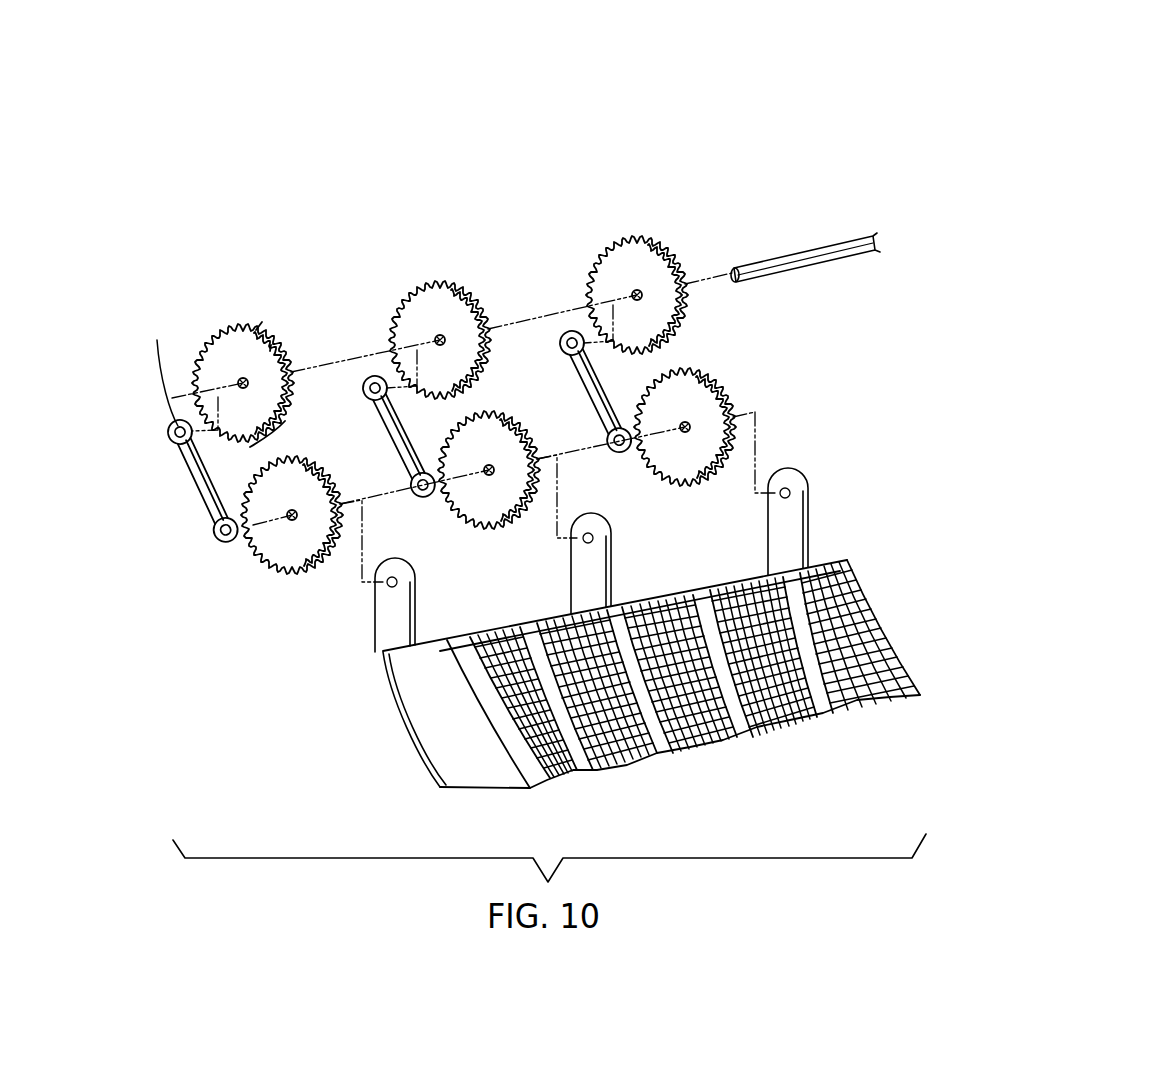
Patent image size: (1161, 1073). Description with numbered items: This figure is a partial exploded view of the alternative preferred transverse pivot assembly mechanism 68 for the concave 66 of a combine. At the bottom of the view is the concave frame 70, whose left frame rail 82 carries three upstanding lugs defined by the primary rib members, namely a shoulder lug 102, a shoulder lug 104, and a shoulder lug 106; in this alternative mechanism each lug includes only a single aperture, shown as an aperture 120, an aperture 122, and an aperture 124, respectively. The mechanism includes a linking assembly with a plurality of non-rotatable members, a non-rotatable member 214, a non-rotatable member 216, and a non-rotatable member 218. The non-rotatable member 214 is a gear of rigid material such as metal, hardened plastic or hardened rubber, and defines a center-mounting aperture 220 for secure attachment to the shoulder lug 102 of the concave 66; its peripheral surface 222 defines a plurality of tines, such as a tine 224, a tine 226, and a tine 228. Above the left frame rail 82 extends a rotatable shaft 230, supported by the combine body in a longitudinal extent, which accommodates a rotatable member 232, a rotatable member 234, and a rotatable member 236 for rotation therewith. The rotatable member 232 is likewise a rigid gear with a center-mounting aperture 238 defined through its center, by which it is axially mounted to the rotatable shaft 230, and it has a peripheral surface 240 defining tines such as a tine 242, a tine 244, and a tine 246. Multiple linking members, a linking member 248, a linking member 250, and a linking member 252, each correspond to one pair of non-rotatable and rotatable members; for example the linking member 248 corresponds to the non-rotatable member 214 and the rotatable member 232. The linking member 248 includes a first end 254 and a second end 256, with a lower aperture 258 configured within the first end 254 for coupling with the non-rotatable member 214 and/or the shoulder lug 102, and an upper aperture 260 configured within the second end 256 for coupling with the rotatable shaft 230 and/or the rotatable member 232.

The concave 66 is at (300, 772).
The alternative preferred transverse pivot assembly mechanism 68 is at (770, 124).
The concave frame 70 is at (440, 799).
The left frame rail 82 is at (827, 557).
The shoulder lug 102 is at (365, 615).
The shoulder lug 104 is at (632, 555).
The shoulder lug 106 is at (853, 467).
The aperture 120 is at (400, 580).
The aperture 122 is at (600, 535).
The aperture 124 is at (790, 492).
The non-rotatable member 214 is at (318, 562).
The non-rotatable member 216 is at (520, 513).
The non-rotatable member 218 is at (718, 470).
The center-mounting aperture 220 is at (298, 509).
The peripheral surface 222 is at (283, 578).
The tine 224 is at (262, 473).
The tine 226 is at (268, 460).
The tine 228 is at (262, 453).
The rotatable shaft 230 is at (800, 256).
The rotatable member 232 is at (228, 335).
The rotatable member 234 is at (438, 283).
The rotatable member 236 is at (645, 245).
The center-mounting aperture 238 is at (272, 344).
The peripheral surface 240 is at (264, 318).
The tine 242 is at (252, 448).
The tine 244 is at (268, 433).
The tine 246 is at (285, 421).
The linking member 248 is at (200, 488).
The linking member 250 is at (402, 450).
The linking member 252 is at (596, 398).
The first end 254 is at (232, 546).
The second end 256 is at (153, 365).
The lower aperture 258 is at (218, 533).
The upper aperture 260 is at (170, 432).